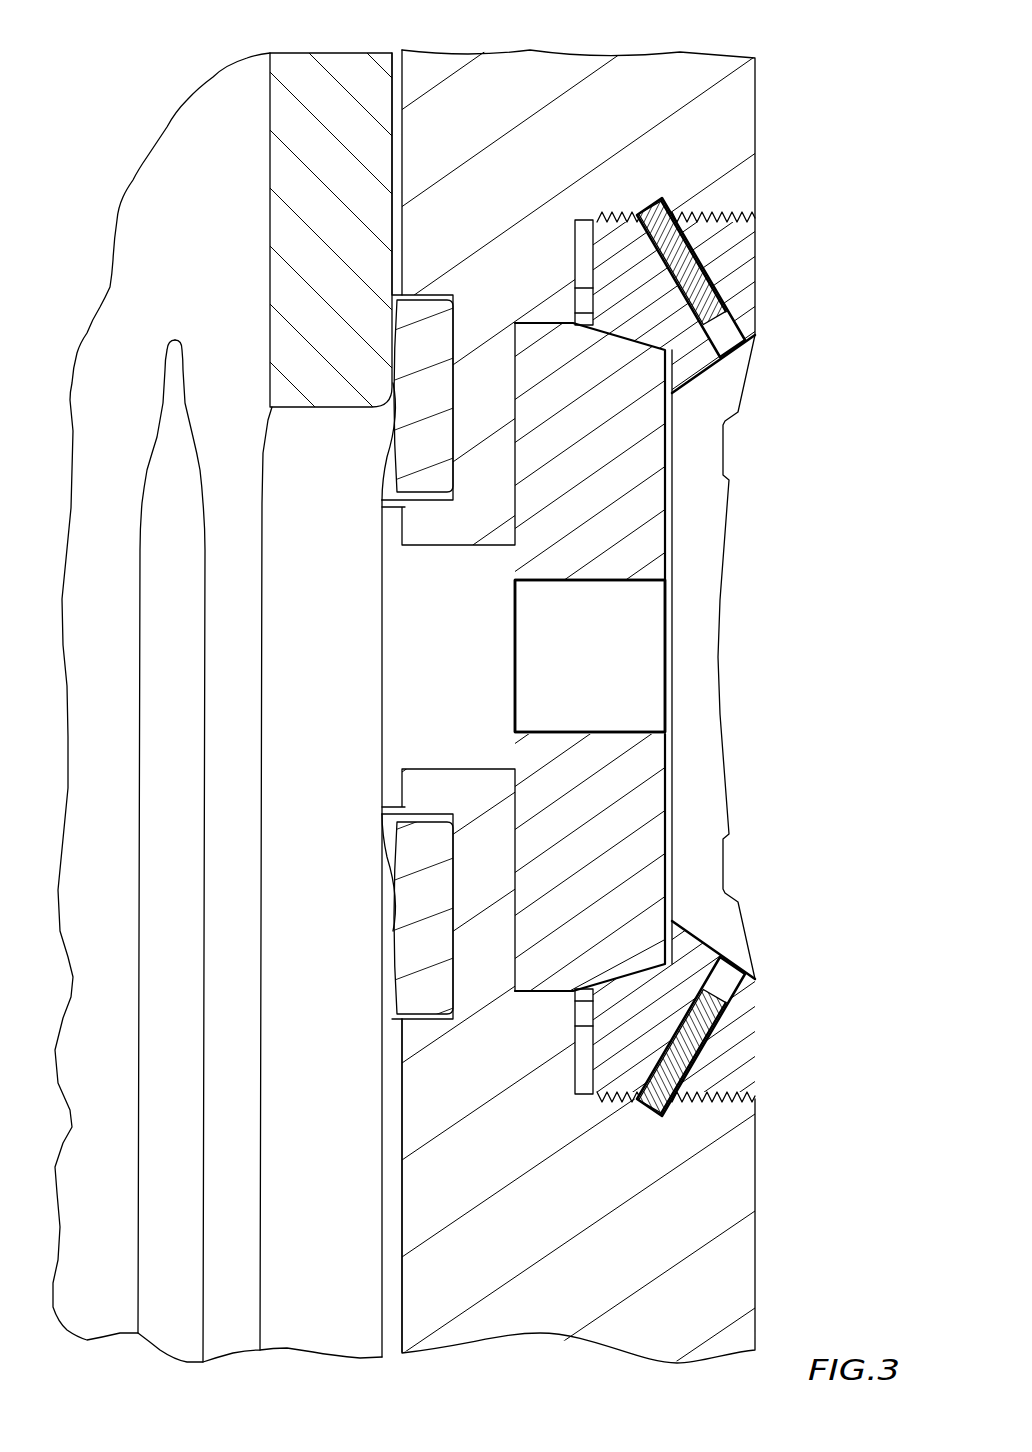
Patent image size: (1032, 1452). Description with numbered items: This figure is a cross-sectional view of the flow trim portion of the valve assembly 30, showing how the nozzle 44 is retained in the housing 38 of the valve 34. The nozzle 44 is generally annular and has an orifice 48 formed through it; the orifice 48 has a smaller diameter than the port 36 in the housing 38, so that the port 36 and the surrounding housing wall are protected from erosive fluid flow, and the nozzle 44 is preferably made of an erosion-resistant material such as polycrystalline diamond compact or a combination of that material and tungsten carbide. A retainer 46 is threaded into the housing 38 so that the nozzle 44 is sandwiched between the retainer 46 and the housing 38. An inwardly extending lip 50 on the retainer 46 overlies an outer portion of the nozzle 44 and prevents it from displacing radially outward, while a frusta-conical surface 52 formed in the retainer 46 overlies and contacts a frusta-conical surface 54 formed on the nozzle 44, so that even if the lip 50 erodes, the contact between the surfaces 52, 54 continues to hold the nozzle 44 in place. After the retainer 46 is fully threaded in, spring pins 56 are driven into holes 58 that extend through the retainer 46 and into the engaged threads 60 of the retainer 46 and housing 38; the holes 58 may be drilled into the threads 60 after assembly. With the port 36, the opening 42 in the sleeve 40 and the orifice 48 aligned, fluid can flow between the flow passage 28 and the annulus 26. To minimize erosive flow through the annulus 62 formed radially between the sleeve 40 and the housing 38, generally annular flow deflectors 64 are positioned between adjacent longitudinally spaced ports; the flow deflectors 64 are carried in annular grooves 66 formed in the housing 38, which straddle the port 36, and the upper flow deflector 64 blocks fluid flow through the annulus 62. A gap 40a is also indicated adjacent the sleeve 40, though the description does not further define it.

The annulus 26 is at (877, 590).
The flow passage 28 is at (148, 192).
The valve assembly 30 is at (820, 50).
The valve 34 is at (762, 1191).
The port 36 is at (497, 662).
The housing 38 is at (755, 142).
The sleeve 40 is at (270, 230).
The gap 40a is at (402, 115).
The opening 42 is at (282, 457).
The nozzle 44 is at (670, 785).
The retainer 46 is at (730, 492).
The orifice 48 is at (650, 615).
The inwardly extending lip 50 is at (673, 393).
The frusta-conical surface 52 is at (640, 347).
The frusta-conical surface 54 is at (590, 1000).
The spring pin 56 is at (705, 295).
The hole 58 is at (705, 262).
The threads 60 is at (715, 207).
The annulus 62 is at (393, 1183).
The flow deflector 64 is at (390, 460).
The annular groove 66 is at (450, 343).